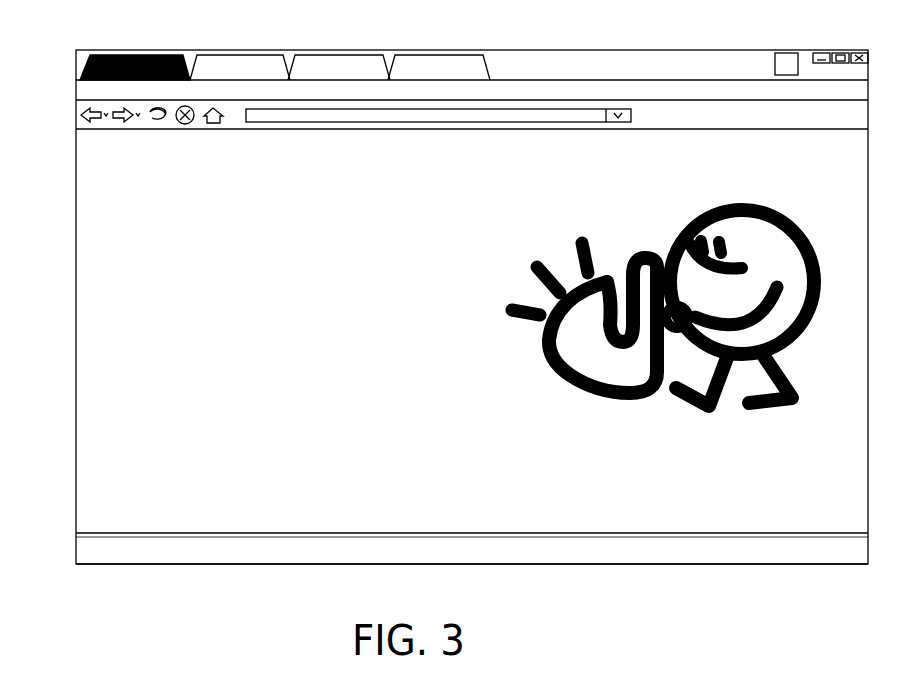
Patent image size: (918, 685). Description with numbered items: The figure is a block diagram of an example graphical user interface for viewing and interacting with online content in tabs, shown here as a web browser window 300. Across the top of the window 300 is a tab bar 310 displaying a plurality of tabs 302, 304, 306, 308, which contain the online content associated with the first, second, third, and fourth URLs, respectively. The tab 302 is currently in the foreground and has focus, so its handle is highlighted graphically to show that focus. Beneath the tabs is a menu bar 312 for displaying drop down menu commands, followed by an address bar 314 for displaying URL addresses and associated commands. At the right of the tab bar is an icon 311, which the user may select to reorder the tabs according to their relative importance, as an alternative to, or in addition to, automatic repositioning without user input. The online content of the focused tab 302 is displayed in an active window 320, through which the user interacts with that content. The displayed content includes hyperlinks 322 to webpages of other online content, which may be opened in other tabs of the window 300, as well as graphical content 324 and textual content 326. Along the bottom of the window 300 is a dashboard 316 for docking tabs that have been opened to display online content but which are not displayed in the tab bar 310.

The window 300 is at (82, 41).
The tab 302 is at (135, 67).
The tab 304 is at (240, 67).
The tab 306 is at (339, 67).
The tab 308 is at (439, 67).
The tab bar 310 is at (472, 43).
The icon 311 is at (792, 53).
The menu bar 312 is at (570, 94).
The address bar 314 is at (653, 113).
The dashboard 316 is at (228, 543).
The active window 320 is at (133, 465).
The hyperlinks 322 is at (202, 248).
The graphical content 324 is at (677, 222).
The textual content 326 is at (558, 440).